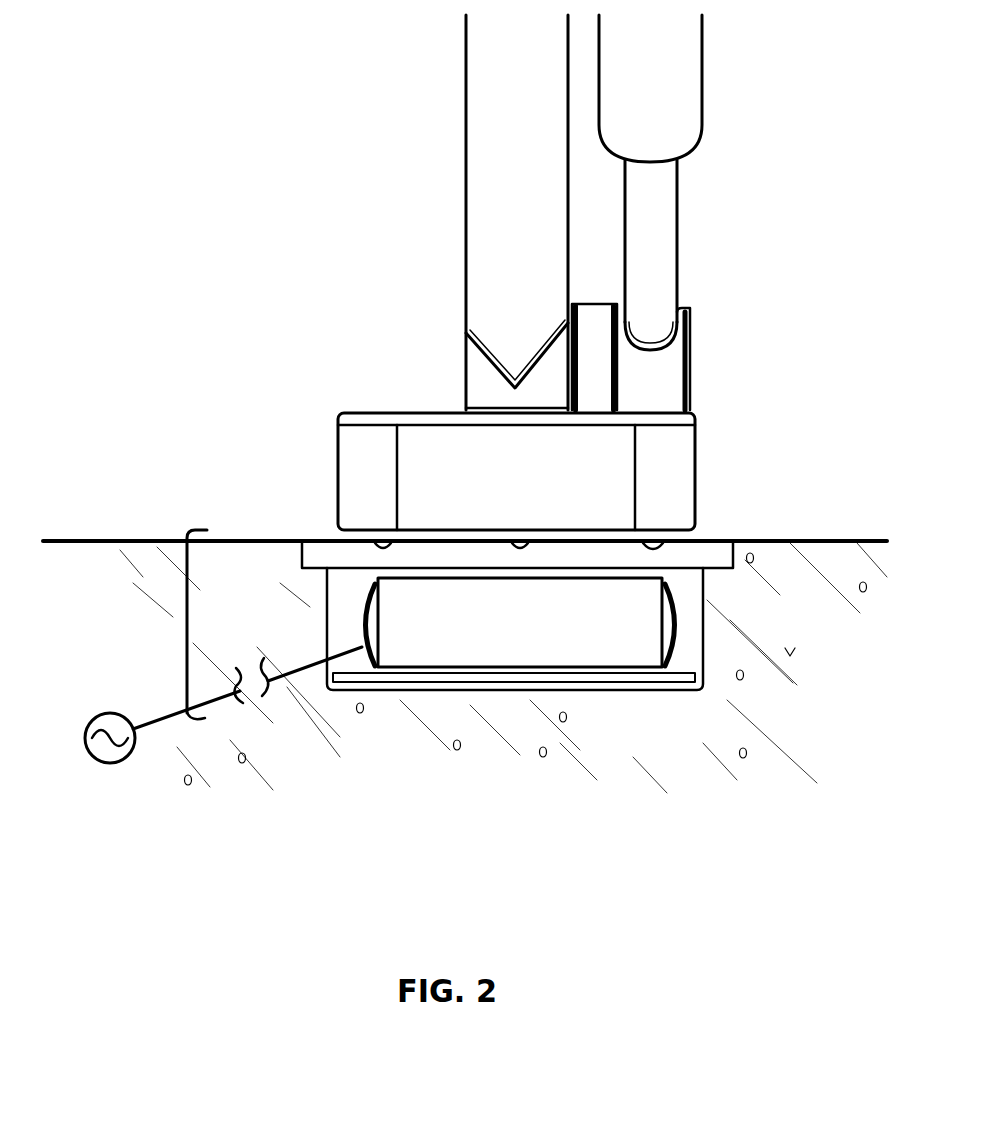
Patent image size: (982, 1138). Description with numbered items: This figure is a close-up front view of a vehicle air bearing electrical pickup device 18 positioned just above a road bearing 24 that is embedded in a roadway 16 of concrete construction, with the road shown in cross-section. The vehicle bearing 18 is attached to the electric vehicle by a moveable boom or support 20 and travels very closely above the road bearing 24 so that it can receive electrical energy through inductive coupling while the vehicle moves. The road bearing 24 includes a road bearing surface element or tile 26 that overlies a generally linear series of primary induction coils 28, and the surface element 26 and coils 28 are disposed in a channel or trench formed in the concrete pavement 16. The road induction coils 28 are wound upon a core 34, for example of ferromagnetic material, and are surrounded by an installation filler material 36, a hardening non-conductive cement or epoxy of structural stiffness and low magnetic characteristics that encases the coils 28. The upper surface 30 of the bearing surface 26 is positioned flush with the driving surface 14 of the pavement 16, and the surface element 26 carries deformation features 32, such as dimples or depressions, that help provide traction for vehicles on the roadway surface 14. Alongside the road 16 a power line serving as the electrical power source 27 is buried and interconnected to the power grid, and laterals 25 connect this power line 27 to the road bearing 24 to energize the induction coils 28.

The driving surface 14 is at (152, 528).
The roadway 16 is at (377, 764).
The vehicle air bearing electrical pickup device 18 is at (657, 493).
The moveable boom 20 is at (650, 77).
The road bearing 24 is at (176, 617).
The lateral 25 is at (163, 702).
The road bearing surface element 26 is at (327, 555).
The electrical power source 27 is at (85, 735).
The primary induction coils 28 is at (542, 637).
The upper surface 30 is at (322, 528).
The deformation features 32 is at (702, 578).
The core 34 is at (675, 628).
The installation filler material 36 is at (353, 600).